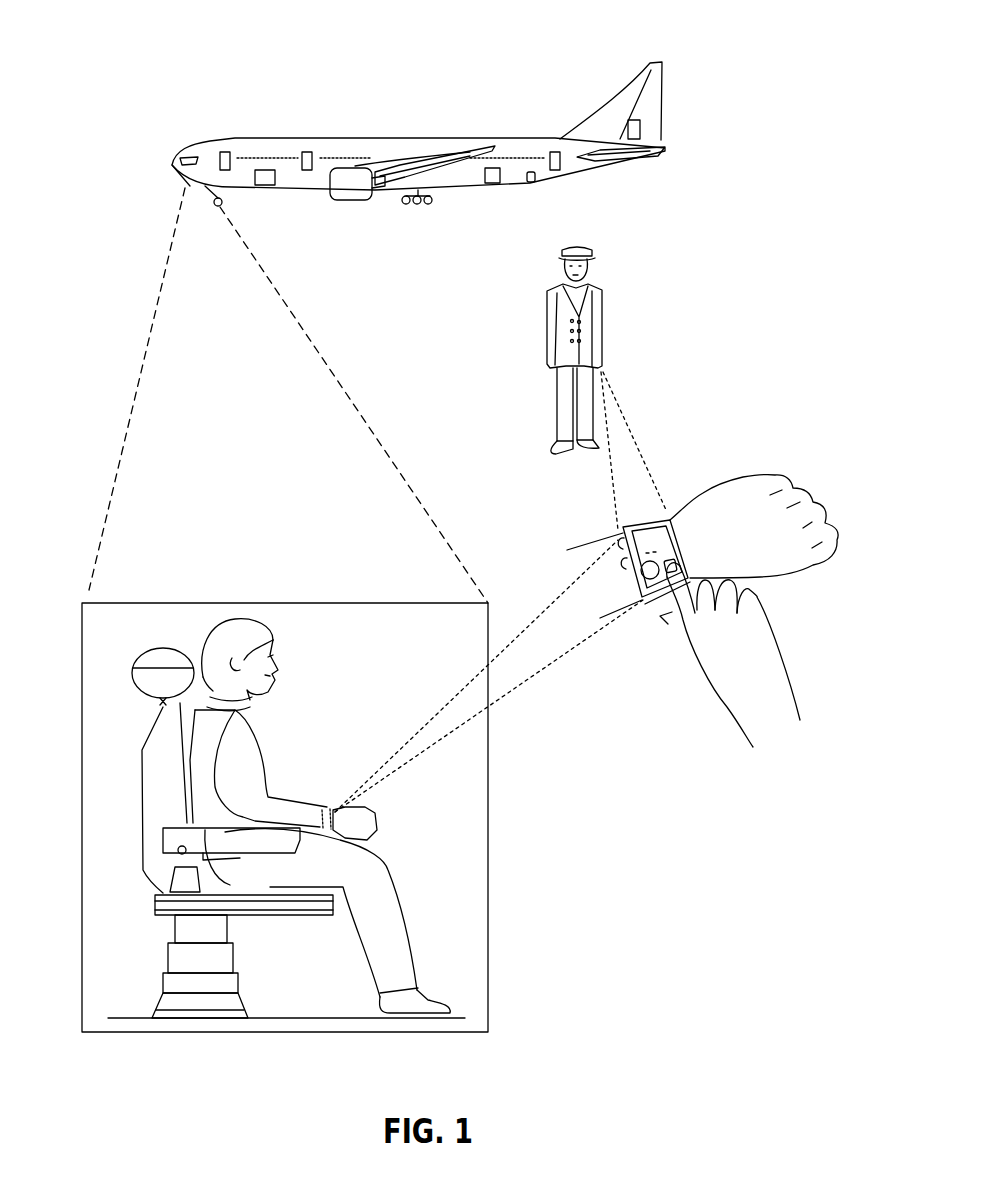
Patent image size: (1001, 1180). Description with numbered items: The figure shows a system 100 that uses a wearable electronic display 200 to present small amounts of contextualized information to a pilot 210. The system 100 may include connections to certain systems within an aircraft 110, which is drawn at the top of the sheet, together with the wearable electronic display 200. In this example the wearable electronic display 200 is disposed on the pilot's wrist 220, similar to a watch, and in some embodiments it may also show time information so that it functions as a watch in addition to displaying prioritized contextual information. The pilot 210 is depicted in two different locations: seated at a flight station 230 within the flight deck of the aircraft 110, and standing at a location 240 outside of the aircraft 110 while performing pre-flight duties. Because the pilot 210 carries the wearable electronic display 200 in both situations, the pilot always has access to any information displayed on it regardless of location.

The system 100 is at (208, 92).
The aircraft 110 is at (468, 137).
The wearable electronic display 200 is at (727, 458).
The pilot 210 is at (602, 326).
The pilot's wrist 220 is at (644, 602).
The flight station 230 is at (65, 560).
The location outside of the aircraft 240 is at (533, 380).